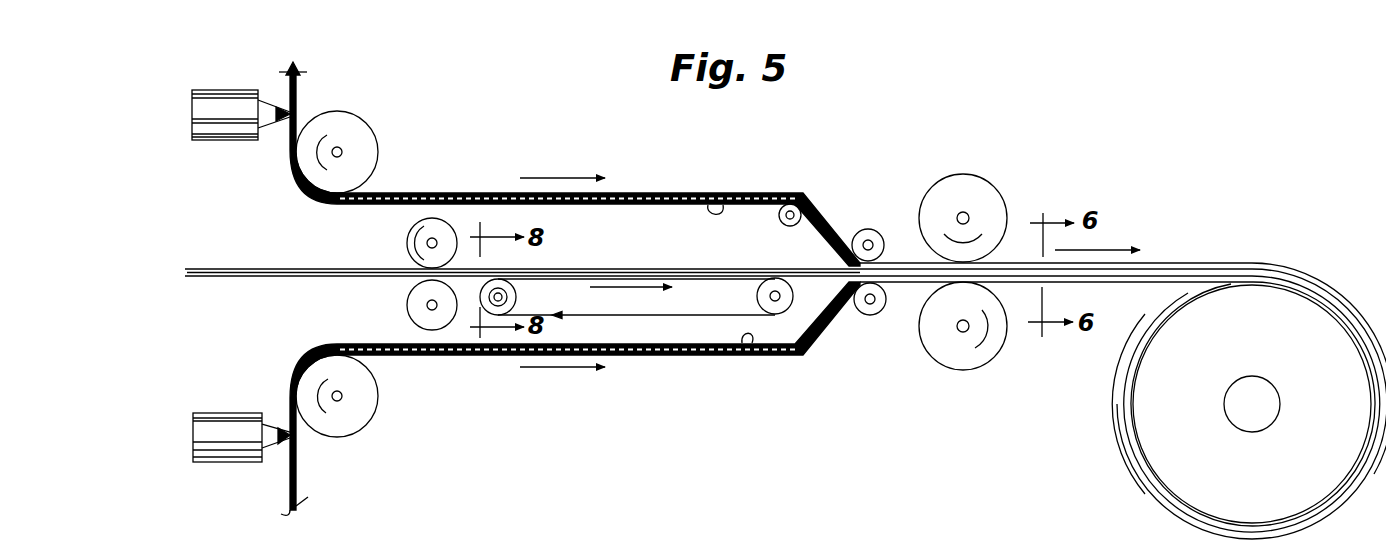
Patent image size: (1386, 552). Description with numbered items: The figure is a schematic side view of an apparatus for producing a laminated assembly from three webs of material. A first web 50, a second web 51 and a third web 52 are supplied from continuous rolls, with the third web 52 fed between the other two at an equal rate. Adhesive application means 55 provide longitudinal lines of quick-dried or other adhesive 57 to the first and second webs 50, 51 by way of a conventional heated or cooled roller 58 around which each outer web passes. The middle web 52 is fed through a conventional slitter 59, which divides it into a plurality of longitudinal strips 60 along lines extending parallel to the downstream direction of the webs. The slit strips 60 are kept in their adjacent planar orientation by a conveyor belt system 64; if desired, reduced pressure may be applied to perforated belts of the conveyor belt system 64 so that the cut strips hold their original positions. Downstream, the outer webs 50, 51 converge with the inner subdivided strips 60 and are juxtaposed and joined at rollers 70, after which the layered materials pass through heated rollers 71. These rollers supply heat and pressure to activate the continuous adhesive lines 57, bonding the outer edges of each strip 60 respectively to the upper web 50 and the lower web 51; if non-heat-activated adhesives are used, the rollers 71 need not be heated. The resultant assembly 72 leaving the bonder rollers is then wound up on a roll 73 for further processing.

The first web 50 is at (298, 92).
The second web 51 is at (300, 468).
The third web 52 is at (240, 278).
The adhesive application means 55 is at (222, 127).
The adhesive lines 57 is at (313, 205).
The heated or cooled roller 58 is at (358, 148).
The slitter 59 is at (431, 220).
The longitudinal strips 60 is at (600, 270).
The conveyor belt system 64 is at (680, 333).
The rollers 70 is at (858, 230).
The heated rollers 71 is at (960, 185).
The resultant assembly 72 is at (1186, 248).
The roll 73 is at (1297, 482).